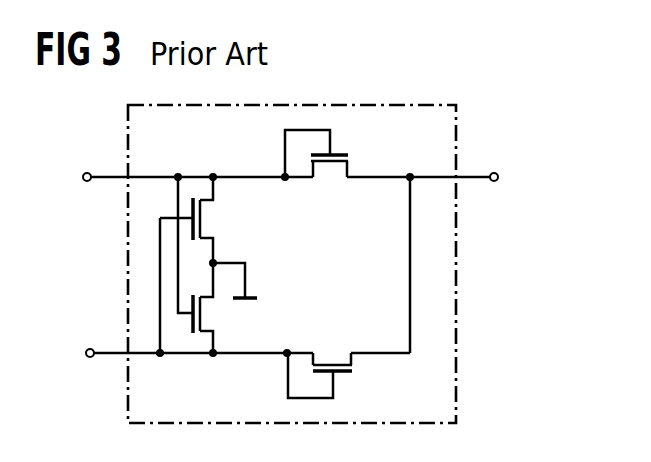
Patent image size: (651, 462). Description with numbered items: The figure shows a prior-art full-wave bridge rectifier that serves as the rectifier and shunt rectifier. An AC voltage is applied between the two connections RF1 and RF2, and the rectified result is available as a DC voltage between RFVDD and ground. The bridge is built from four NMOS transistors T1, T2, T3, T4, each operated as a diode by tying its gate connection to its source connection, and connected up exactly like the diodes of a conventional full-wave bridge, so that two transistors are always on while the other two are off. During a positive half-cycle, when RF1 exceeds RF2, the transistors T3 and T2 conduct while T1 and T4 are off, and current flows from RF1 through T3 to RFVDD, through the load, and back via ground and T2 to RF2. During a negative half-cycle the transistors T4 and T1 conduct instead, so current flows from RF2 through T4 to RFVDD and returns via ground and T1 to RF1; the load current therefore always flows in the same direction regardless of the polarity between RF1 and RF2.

The NMOS transistor T1 is at (202, 211).
The NMOS transistor T2 is at (202, 318).
The NMOS transistor T3 is at (331, 163).
The NMOS transistor T4 is at (326, 363).
The connection RF1 is at (63, 177).
The connection RF2 is at (66, 352).
The DC voltage output RFVDD is at (536, 177).